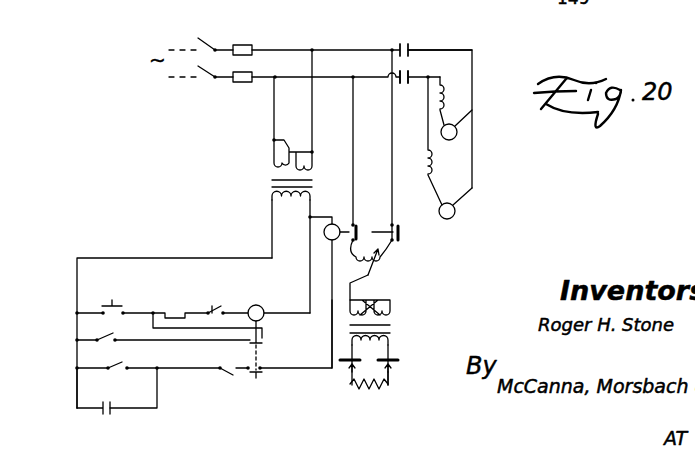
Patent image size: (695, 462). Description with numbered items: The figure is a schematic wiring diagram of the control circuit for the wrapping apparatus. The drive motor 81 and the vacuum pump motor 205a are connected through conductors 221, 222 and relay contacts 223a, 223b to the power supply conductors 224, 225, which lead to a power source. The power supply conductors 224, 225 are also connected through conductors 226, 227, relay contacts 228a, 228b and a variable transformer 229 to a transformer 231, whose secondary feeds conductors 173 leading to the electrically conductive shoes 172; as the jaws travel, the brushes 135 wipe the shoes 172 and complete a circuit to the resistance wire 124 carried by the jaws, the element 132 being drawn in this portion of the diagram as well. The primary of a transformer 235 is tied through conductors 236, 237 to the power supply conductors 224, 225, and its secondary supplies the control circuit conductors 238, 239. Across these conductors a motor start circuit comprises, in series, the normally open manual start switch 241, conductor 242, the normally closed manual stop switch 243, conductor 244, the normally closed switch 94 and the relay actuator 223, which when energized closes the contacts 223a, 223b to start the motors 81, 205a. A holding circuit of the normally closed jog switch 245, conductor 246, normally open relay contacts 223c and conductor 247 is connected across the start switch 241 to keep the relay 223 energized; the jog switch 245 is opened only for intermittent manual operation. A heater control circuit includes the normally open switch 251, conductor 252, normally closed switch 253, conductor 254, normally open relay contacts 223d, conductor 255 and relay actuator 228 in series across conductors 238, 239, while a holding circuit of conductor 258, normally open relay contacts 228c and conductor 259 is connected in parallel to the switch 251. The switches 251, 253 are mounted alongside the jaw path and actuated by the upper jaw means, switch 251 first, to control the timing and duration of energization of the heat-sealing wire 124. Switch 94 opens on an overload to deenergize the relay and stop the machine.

The power supply conductor 224 is at (272, 50).
The power supply conductor 225 is at (262, 79).
The relay contact 223a is at (404, 45).
The conductor 221 is at (433, 50).
The conductor 222 is at (416, 79).
The relay contact 223b is at (408, 86).
The drive motor 81 is at (457, 132).
The vacuum pump motor 205a is at (455, 211).
The conductor 227 is at (353, 198).
The conductor 226 is at (391, 208).
The conductor 237 is at (312, 117).
The conductor 236 is at (274, 108).
The transformer 235 is at (272, 165).
The conductor 239 is at (310, 236).
The relay actuator 228 is at (333, 223).
The relay contact 228a is at (403, 232).
The relay contact 228b is at (364, 260).
The variable transformer 229 is at (396, 259).
The transformer 231 is at (390, 309).
The conductor 173 is at (392, 340).
The electrically conductive shoe 172 is at (398, 360).
The brush 135 is at (395, 367).
The lead 132 is at (392, 373).
The resistance wire 124 is at (369, 388).
The conductor 255 is at (331, 363).
The conductor 238 is at (147, 257).
The start switch 241 is at (111, 301).
The conductor 242 is at (136, 312).
The stop switch 243 is at (168, 310).
The conductor 244 is at (212, 300).
The normally closed switch 94 is at (214, 305).
The relay actuator 223 is at (268, 296).
The jog switch 245 is at (97, 337).
The conductor 246 is at (121, 357).
The conductor 247 is at (173, 357).
The normally closed switch 253 is at (216, 373).
The conductor 254 is at (238, 377).
The relay contact 223c is at (281, 344).
The relay contact 223d is at (256, 379).
The conductor 258 is at (77, 395).
The normally open switch 251 is at (118, 370).
The conductor 252 is at (173, 371).
The relay contact 228c is at (103, 407).
The conductor 259 is at (152, 409).